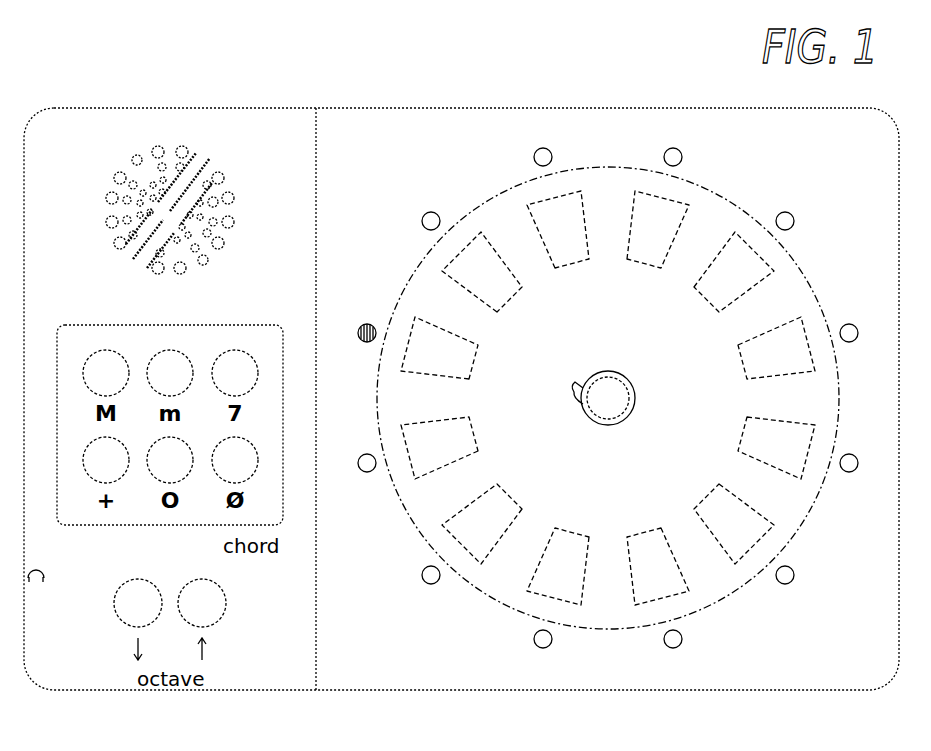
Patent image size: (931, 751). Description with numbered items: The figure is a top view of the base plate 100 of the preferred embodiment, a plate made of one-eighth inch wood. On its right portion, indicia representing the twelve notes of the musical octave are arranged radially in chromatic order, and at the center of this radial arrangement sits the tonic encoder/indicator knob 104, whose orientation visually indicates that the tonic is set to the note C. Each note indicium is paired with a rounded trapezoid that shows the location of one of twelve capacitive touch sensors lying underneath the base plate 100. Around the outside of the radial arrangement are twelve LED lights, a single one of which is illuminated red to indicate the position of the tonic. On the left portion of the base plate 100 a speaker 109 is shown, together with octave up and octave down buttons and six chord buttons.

The base plate 100 is at (419, 700).
The tonic encoder/indicator knob 104 is at (628, 366).
The speaker 109 is at (160, 143).